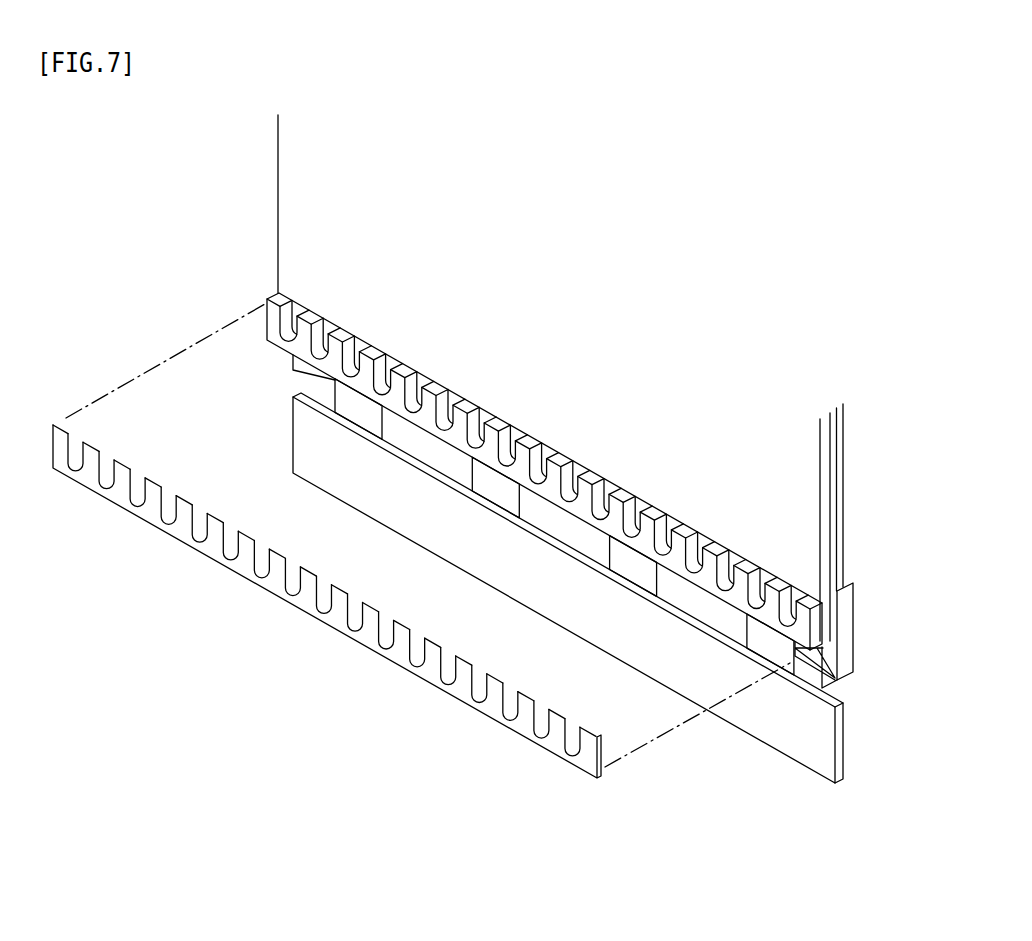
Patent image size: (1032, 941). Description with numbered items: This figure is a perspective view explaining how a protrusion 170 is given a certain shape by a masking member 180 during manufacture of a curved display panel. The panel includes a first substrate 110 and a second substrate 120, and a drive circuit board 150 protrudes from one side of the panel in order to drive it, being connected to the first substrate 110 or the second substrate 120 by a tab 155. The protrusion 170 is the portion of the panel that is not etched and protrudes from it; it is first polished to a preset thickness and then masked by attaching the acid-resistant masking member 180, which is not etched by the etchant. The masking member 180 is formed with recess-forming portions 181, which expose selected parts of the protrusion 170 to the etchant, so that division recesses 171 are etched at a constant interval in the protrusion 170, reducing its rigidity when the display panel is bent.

The first substrate 110 is at (297, 223).
The second substrate 120 is at (838, 518).
The drive circuit board 150 is at (612, 638).
The tab 155 is at (633, 565).
The protrusion 170 is at (322, 332).
The division recesses 171 is at (507, 447).
The masking member 180 is at (493, 712).
The recess-forming portions 181 is at (447, 663).